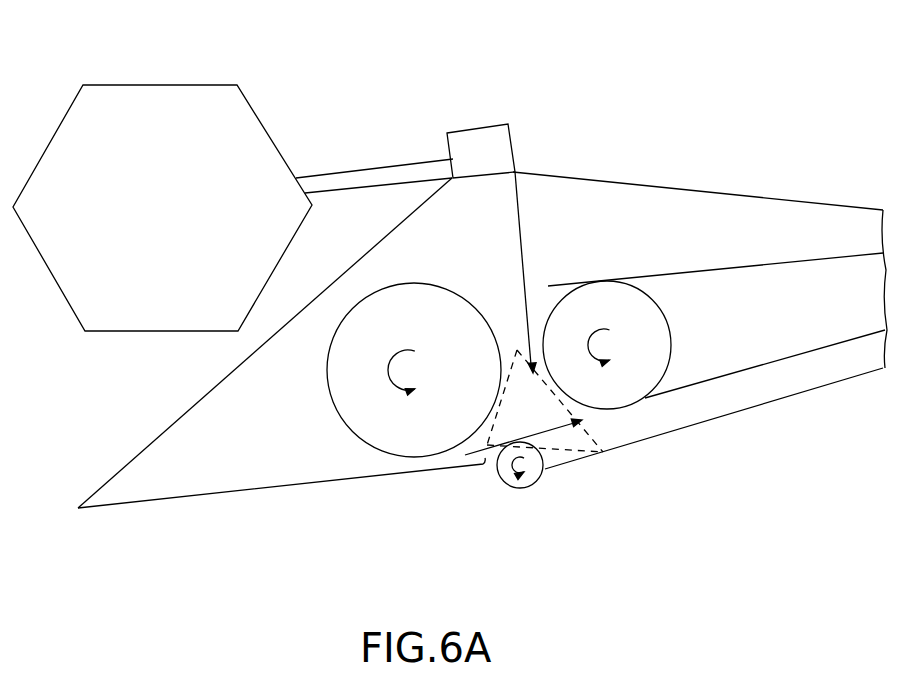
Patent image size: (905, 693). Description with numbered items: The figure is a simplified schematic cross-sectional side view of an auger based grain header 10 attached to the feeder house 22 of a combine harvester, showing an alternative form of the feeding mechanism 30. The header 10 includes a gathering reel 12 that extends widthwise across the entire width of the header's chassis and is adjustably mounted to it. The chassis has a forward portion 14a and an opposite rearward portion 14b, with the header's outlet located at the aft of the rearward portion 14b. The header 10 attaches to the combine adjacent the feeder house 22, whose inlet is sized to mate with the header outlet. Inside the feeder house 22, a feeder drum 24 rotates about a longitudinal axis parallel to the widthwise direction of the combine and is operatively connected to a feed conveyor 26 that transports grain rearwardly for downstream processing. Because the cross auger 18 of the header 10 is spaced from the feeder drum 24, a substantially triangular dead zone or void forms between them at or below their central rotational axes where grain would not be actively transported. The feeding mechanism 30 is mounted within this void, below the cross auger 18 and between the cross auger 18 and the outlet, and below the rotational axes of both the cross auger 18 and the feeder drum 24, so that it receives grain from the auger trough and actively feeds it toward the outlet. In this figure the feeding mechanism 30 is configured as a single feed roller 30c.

The header 10 is at (333, 70).
The gathering reel 12 is at (158, 85).
The forward portion 14a is at (455, 499).
The rearward portion 14b is at (222, 545).
The cross auger 18 is at (408, 283).
The feeder house 22 is at (742, 195).
The feeder drum 24 is at (585, 282).
The feed conveyor 26 is at (826, 257).
The feeding mechanism 30 is at (556, 484).
The single feed roller 30c is at (530, 490).